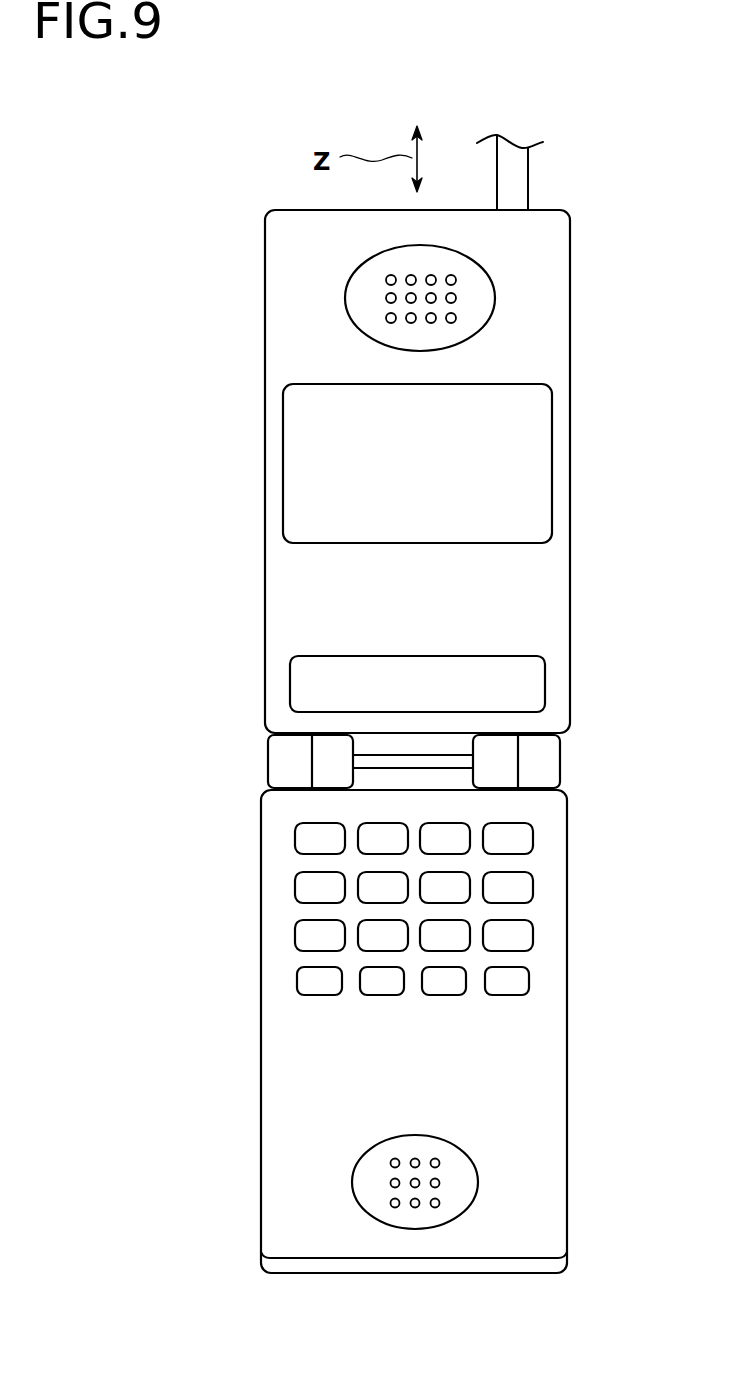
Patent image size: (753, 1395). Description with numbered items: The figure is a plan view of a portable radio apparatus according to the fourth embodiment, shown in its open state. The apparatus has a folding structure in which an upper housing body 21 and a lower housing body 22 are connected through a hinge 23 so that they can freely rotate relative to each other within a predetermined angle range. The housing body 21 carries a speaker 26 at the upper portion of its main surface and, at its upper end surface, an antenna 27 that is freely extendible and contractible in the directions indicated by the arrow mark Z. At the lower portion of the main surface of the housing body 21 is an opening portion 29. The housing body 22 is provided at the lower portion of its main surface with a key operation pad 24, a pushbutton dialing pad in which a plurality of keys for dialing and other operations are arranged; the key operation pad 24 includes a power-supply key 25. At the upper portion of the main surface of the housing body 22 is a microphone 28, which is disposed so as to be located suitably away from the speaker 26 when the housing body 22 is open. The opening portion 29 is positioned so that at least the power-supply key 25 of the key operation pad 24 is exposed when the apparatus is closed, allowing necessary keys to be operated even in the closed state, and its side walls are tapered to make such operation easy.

The housing body 21 is at (265, 217).
The housing body 22 is at (340, 1273).
The hinge 23 is at (560, 757).
The key operation pad 24 is at (321, 912).
The power-supply key 25 is at (525, 842).
The speaker 26 is at (372, 298).
The antenna 27 is at (518, 170).
The microphone 28 is at (458, 1192).
The opening portion 29 is at (540, 677).